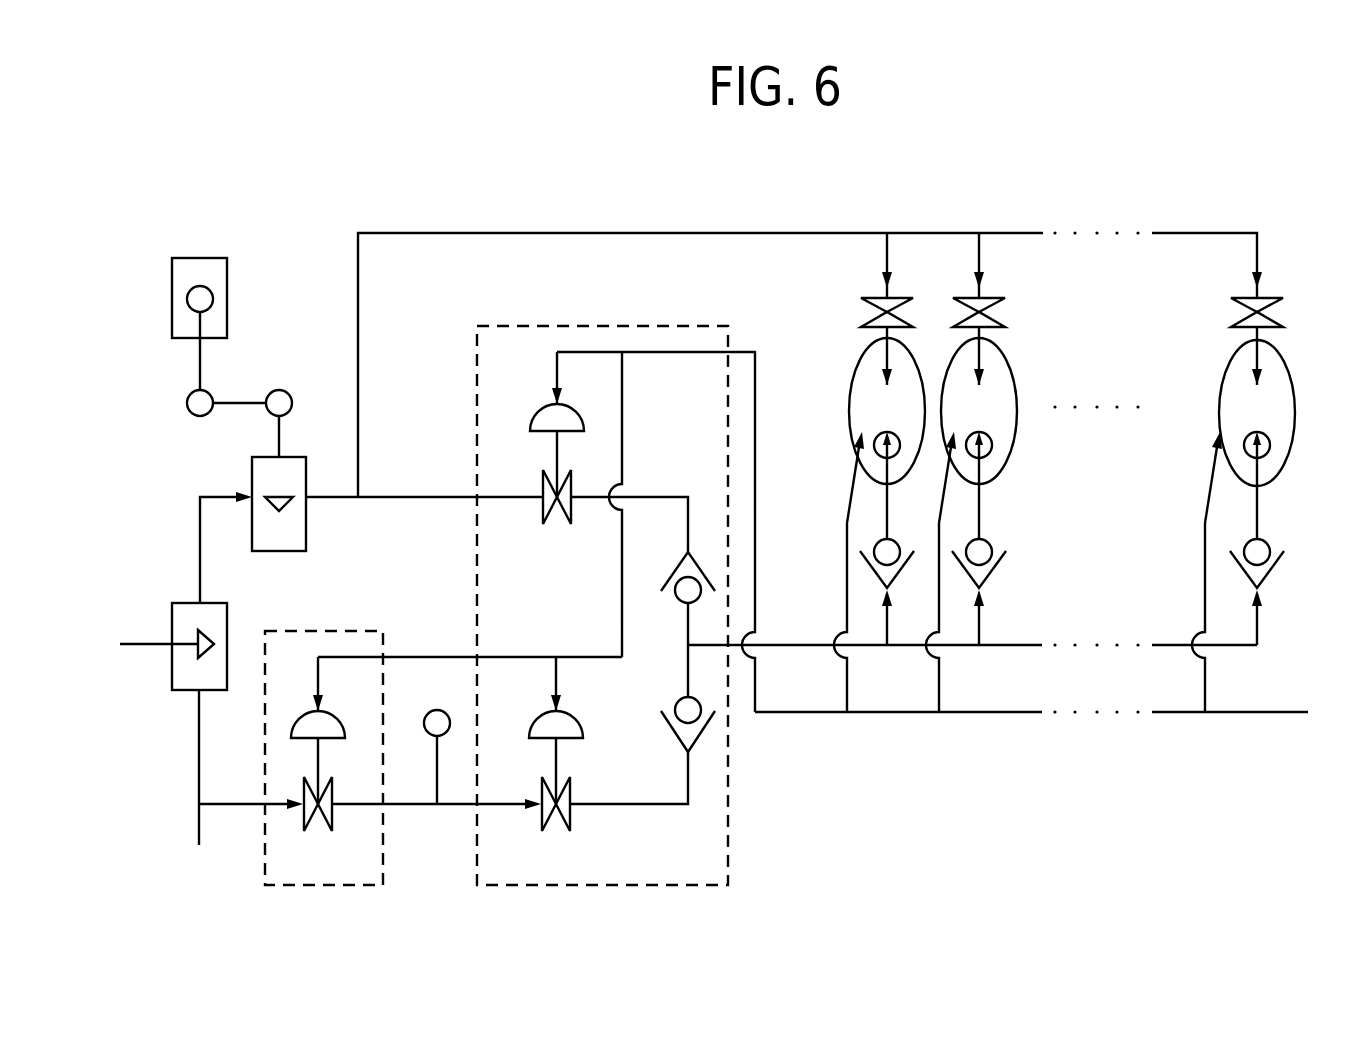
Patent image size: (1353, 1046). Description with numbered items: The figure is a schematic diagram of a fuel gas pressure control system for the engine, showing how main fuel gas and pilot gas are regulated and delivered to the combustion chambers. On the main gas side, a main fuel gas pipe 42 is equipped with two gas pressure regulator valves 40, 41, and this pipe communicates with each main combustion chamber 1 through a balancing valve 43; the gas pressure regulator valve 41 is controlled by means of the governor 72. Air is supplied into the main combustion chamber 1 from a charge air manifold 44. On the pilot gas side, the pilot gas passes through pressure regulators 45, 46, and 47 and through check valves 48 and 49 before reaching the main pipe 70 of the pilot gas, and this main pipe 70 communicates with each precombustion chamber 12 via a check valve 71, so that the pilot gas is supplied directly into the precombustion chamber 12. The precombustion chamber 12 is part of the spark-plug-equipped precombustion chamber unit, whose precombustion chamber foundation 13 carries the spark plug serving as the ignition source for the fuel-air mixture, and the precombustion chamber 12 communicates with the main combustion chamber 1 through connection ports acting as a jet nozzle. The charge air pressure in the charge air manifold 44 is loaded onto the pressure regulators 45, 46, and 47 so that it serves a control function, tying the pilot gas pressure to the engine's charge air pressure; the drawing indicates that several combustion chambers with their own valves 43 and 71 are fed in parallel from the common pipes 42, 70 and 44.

The main combustion chamber 1 is at (862, 388).
The precombustion chamber 12 is at (862, 448).
The precombustion chamber foundation 13 is at (868, 308).
The gas pressure regulator valve 40 is at (178, 600).
The gas pressure regulator valve 41 is at (308, 513).
The main fuel gas pipe 42 is at (722, 233).
The balancing valve 43 is at (1005, 312).
The charge air manifold 44 is at (1250, 714).
The pressure regulator 45 is at (560, 530).
The pressure regulator 46 is at (303, 818).
The pressure regulator 47 is at (571, 820).
The check valve 48 is at (707, 547).
The check valve 49 is at (670, 730).
The main pipe of the pilot gas 70 is at (1232, 650).
The check valve 71 is at (868, 580).
The governor 72 is at (228, 300).